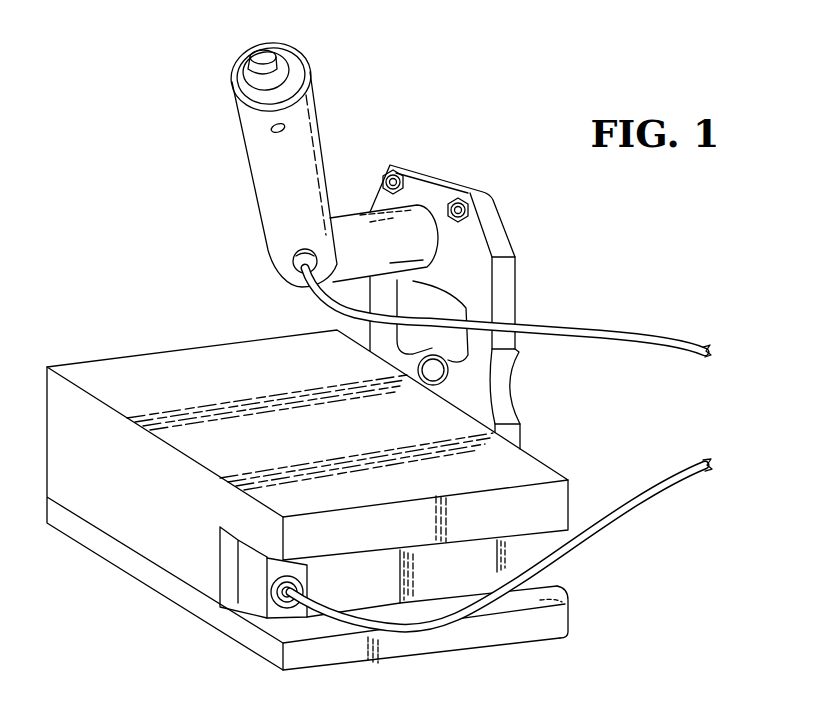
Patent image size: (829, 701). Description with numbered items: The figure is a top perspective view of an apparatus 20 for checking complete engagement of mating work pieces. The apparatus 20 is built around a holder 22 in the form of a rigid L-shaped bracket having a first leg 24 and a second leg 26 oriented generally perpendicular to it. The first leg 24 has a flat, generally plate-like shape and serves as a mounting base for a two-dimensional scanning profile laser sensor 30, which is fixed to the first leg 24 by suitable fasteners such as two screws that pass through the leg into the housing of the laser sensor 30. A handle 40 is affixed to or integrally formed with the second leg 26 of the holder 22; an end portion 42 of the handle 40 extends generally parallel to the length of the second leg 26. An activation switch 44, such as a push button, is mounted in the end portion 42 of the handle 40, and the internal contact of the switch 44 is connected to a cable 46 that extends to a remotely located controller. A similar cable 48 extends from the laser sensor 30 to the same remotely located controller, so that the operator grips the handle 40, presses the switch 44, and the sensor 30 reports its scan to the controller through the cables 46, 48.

The apparatus 20 is at (438, 243).
The holder 22 is at (106, 567).
The first leg 24 is at (542, 626).
The second leg 26 is at (430, 167).
The 2D scanning profile laser sensor 30 is at (113, 378).
The handle 40 is at (258, 167).
The end portion 42 is at (410, 233).
The activation switch 44 is at (262, 53).
The cable 46 is at (660, 346).
The cable 48 is at (653, 487).